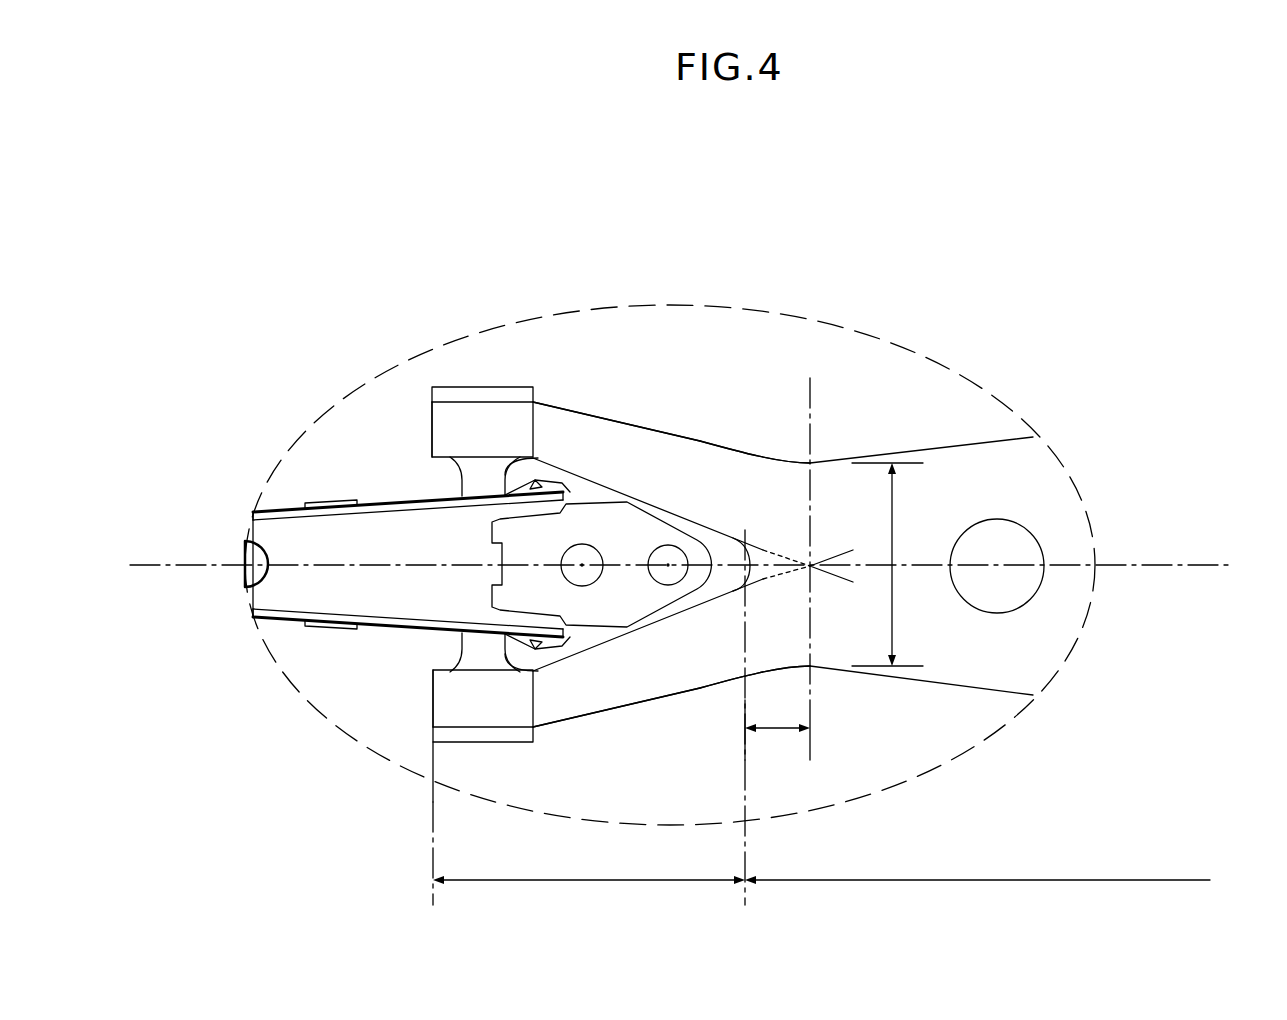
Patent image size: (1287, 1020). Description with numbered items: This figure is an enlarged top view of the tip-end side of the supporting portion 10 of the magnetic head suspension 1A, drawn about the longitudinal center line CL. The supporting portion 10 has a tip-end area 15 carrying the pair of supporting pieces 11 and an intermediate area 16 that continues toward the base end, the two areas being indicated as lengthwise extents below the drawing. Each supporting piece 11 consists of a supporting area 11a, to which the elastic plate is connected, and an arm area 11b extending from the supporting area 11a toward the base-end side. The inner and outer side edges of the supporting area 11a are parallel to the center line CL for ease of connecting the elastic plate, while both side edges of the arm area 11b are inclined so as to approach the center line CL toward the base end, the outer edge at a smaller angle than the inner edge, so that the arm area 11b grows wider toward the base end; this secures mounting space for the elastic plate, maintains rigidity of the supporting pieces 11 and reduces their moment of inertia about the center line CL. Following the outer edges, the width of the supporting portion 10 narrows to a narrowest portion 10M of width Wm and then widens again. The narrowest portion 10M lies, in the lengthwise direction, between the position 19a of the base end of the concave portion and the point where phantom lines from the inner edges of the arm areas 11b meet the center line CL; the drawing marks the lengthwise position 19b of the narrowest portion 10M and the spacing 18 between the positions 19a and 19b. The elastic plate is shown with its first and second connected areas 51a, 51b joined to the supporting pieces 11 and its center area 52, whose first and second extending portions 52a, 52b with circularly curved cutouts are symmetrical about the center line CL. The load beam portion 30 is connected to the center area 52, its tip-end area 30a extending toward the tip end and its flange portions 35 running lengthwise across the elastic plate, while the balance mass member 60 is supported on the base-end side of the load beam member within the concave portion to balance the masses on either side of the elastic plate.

The magnetic head suspension 1A is at (703, 374).
The supporting portion 10 is at (911, 436).
The narrowest portion 10M is at (818, 457).
The supporting pieces 11 is at (603, 384).
The supporting areas 11a is at (506, 410).
The arm areas 11b is at (637, 437).
The tip-end area 15 is at (589, 868).
The intermediate area 16 is at (977, 868).
The offset distance 18 is at (777, 716).
The position of base-end of concave portion 19a is at (745, 746).
The frame narrowest position 19b is at (809, 746).
The load beam portion 30 is at (337, 564).
The tip-end area of load beam member 30a is at (378, 600).
The flange portions 35 is at (378, 507).
The first connected area 51a is at (463, 735).
The second connected area 51b is at (450, 397).
The center area 52 is at (433, 551).
The first extending portion 52a is at (451, 642).
The second extending portion 52b is at (452, 483).
The balance mass member 60 is at (630, 546).
The width of narrowest portion Wm is at (887, 564).
The longitudinal center line CL is at (920, 572).